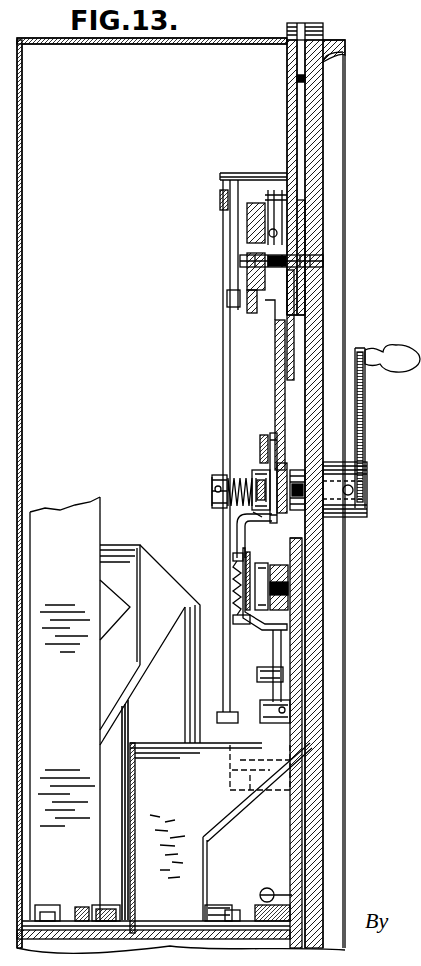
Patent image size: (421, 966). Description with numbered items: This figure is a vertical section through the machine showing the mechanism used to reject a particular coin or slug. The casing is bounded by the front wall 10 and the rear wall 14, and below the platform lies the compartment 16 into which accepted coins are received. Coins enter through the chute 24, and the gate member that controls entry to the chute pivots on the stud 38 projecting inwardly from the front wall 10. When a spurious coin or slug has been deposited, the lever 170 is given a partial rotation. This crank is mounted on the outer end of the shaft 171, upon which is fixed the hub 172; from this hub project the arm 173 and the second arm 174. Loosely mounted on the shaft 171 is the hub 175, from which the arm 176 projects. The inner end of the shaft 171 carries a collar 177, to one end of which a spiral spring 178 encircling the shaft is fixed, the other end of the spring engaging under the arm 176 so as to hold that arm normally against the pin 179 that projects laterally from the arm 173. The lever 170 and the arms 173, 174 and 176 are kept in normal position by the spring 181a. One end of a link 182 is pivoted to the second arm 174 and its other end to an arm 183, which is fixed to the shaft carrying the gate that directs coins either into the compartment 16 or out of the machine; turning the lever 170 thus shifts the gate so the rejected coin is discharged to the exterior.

The front wall 10 is at (313, 222).
The rear wall 14 is at (22, 285).
The compartment 16 is at (226, 153).
The chute 24 is at (287, 34).
The stud 38 is at (265, 264).
The lever 170 is at (365, 397).
The shaft 171 is at (212, 487).
The hub 172 is at (290, 513).
The arm 173 is at (272, 433).
The second arm 174 is at (243, 540).
The hub 175 is at (253, 512).
The arm 176 is at (270, 463).
The collar 177 is at (217, 475).
The spiral spring 178 is at (243, 479).
The pin 179 is at (260, 443).
The spring 181a is at (233, 578).
The link 182 is at (245, 600).
The arm 183 is at (273, 645).